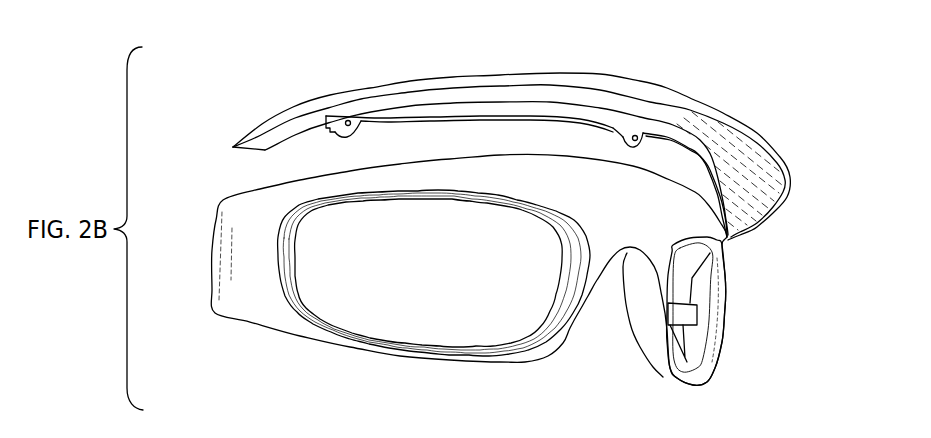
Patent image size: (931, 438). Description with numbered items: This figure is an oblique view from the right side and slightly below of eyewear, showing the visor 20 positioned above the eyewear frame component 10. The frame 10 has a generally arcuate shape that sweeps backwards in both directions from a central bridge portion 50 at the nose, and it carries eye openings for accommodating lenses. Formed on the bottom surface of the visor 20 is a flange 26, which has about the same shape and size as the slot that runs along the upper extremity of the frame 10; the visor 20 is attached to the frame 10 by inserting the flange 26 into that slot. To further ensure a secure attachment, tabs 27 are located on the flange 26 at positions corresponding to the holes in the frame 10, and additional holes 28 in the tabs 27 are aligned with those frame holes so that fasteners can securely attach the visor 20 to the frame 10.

The eyewear frame component 10 is at (543, 357).
The visor 20 is at (718, 131).
The flange 26 is at (577, 119).
The tabs 27 is at (362, 128).
The holes 28 is at (347, 120).
The central bridge portion 50 is at (648, 225).